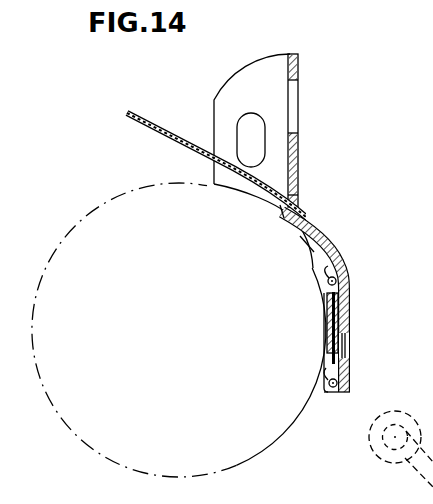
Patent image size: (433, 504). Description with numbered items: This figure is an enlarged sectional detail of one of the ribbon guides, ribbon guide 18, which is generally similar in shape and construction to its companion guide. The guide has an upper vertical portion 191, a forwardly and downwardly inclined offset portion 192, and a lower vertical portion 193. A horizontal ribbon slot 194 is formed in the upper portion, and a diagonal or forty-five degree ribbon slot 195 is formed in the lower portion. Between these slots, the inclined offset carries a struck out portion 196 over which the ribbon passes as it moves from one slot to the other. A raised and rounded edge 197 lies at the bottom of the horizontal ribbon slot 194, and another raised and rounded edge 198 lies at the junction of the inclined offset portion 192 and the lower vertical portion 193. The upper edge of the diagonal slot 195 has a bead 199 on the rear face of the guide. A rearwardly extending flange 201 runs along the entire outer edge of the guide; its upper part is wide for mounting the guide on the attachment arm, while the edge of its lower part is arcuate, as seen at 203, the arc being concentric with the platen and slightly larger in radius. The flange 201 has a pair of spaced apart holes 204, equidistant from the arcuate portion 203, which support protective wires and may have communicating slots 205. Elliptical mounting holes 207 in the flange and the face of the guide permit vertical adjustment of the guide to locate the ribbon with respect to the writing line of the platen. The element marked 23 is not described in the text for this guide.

The ribbon guide 18 is at (310, 119).
The flexible strip 23 is at (150, 128).
The upper vertical portion 191 is at (298, 73).
The elliptical mounting holes 207 is at (238, 118).
The horizontal ribbon slot 194 is at (297, 200).
The struck out portion 196 is at (308, 225).
The inclined offset portion 192 is at (322, 250).
The raised and rounded edge 197 is at (283, 221).
The arcuate edge of flange 203 is at (310, 242).
The rearwardly extending flange 201 is at (318, 261).
The raised and rounded edge 198 is at (327, 277).
The spaced apart holes 204 is at (326, 297).
The lower vertical portion 193 is at (340, 297).
The bead 199 is at (344, 324).
The diagonal ribbon slot 195 is at (351, 351).
The communicating slots 205 is at (330, 378).